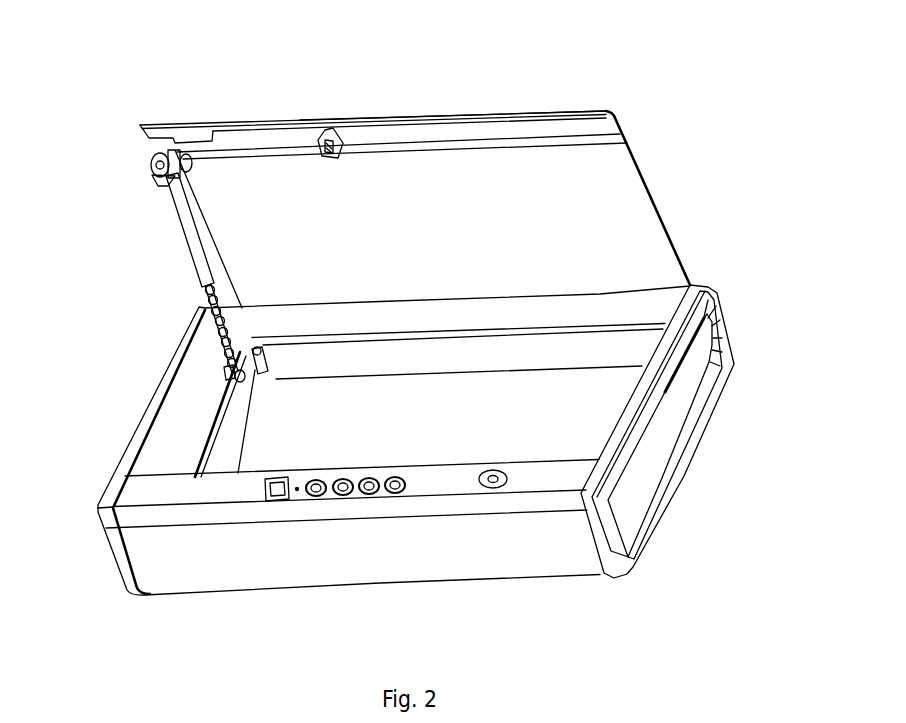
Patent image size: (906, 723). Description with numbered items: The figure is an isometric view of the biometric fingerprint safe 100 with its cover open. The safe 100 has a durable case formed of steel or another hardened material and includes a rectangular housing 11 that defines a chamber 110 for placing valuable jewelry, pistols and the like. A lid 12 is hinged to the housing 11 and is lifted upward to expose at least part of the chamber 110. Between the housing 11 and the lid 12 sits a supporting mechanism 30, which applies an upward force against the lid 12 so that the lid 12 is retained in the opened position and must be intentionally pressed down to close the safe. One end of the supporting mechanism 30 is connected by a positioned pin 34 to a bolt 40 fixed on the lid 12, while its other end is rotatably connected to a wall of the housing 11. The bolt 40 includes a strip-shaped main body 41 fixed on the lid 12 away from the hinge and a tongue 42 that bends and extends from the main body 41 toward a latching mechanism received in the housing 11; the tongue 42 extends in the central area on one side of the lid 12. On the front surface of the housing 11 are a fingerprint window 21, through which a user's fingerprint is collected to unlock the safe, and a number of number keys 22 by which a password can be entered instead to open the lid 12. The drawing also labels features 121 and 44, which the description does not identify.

The safe 100 is at (412, 42).
The housing 11 is at (558, 556).
The lid 12 is at (652, 190).
The chamber 110 is at (608, 377).
The top edge of lid 121 is at (458, 130).
The fingerprint window 21 is at (283, 499).
The number keys 22 is at (399, 494).
The supporting mechanism 30 is at (182, 243).
The positioned pin 34 is at (160, 178).
The bolt 40 is at (293, 134).
The main body 41 is at (252, 149).
The tongue 42 is at (331, 157).
The hinge pin 44 is at (158, 160).